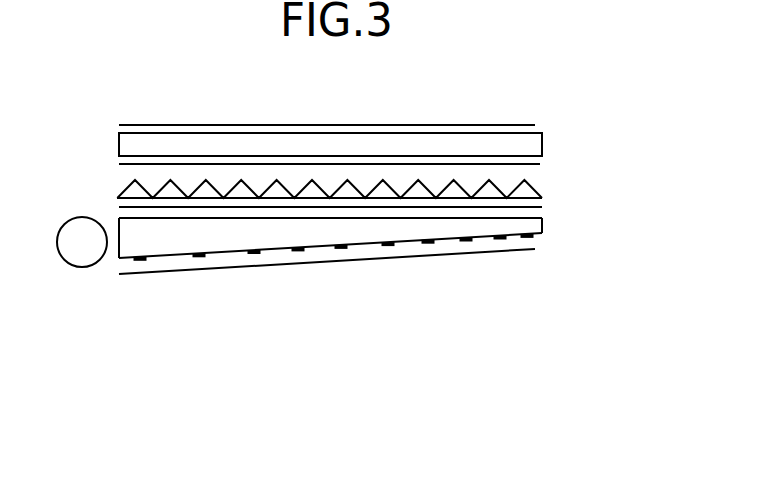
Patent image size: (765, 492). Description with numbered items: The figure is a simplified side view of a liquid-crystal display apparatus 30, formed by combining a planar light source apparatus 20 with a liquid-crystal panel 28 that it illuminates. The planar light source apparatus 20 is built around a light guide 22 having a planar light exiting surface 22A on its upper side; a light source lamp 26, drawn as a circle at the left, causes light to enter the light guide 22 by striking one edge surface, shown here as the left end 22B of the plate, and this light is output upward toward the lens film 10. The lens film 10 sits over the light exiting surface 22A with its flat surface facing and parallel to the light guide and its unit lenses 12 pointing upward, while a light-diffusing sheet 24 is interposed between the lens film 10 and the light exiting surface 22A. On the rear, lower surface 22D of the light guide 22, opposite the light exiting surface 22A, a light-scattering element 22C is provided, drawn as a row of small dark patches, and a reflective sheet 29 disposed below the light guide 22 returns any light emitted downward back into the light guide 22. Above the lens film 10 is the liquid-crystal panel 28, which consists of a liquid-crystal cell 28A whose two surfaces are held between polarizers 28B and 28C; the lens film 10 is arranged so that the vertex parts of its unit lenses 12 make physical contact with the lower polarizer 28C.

The liquid-crystal display apparatus 30 is at (115, 115).
The liquid-crystal panel 28 is at (628, 83).
The liquid-crystal cell 28A is at (542, 145).
The polarizer 28B is at (535, 125).
The lower polarizer 28C is at (540, 164).
The planar light source apparatus 20 is at (610, 185).
The lens film 10 is at (535, 188).
The unit lenses 12 is at (117, 197).
The light-diffusing sheet 24 is at (125, 207).
The light guide 22 is at (540, 225).
The light exiting surface 22A is at (130, 216).
The light entrance end surface 22B is at (119, 240).
The light-scattering element 22C is at (203, 258).
The bottom surface 22D is at (363, 245).
The reflective sheet 29 is at (530, 250).
The light source lamp 26 is at (70, 257).